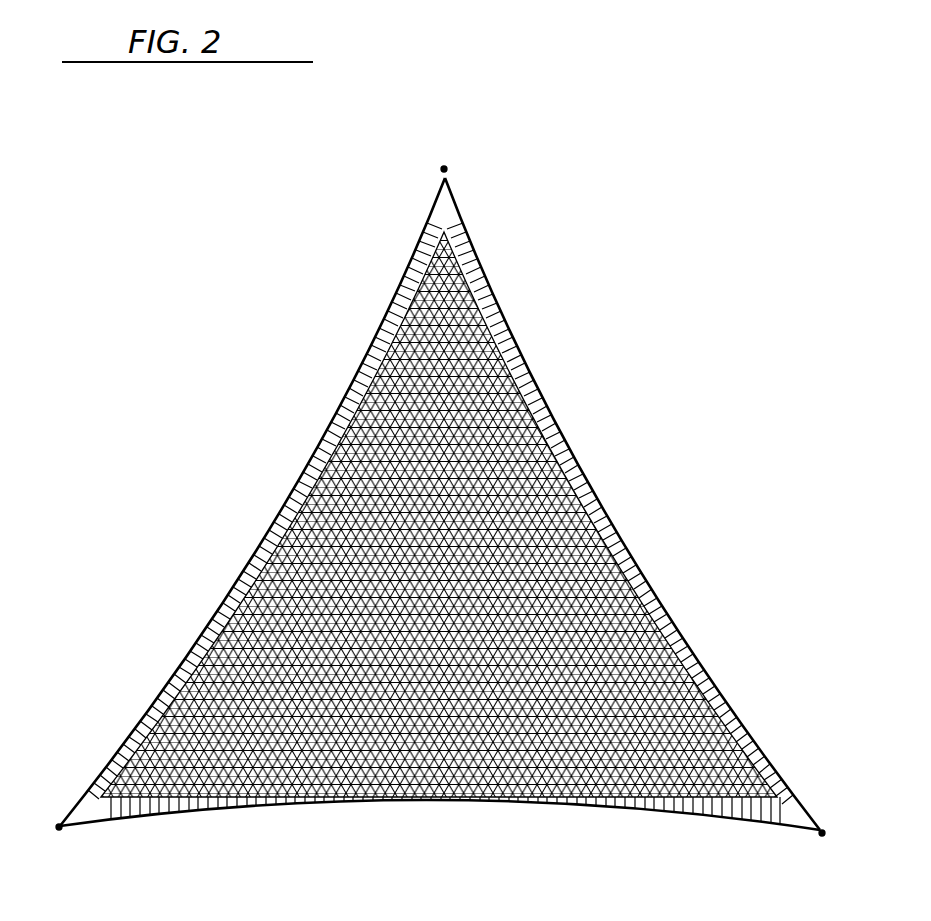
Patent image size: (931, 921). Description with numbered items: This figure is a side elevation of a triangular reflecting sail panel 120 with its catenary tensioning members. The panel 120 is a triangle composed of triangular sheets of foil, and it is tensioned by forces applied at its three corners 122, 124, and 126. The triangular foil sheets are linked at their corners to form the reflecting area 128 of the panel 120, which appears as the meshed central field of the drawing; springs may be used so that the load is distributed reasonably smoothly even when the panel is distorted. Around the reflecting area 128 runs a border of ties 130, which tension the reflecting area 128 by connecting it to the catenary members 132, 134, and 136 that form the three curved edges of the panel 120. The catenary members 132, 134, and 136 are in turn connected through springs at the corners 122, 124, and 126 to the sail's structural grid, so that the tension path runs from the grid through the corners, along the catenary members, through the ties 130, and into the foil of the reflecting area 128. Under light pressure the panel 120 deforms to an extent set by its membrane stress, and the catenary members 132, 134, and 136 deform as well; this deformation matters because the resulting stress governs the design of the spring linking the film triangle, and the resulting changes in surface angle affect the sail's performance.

The sail panel 120 is at (210, 563).
The corner 122 is at (449, 163).
The corner 124 is at (65, 831).
The corner 126 is at (812, 840).
The reflecting area 128 is at (316, 482).
The ties 130 is at (404, 272).
The catenary member 132 is at (173, 673).
The catenary member 134 is at (623, 540).
The catenary member 136 is at (349, 805).